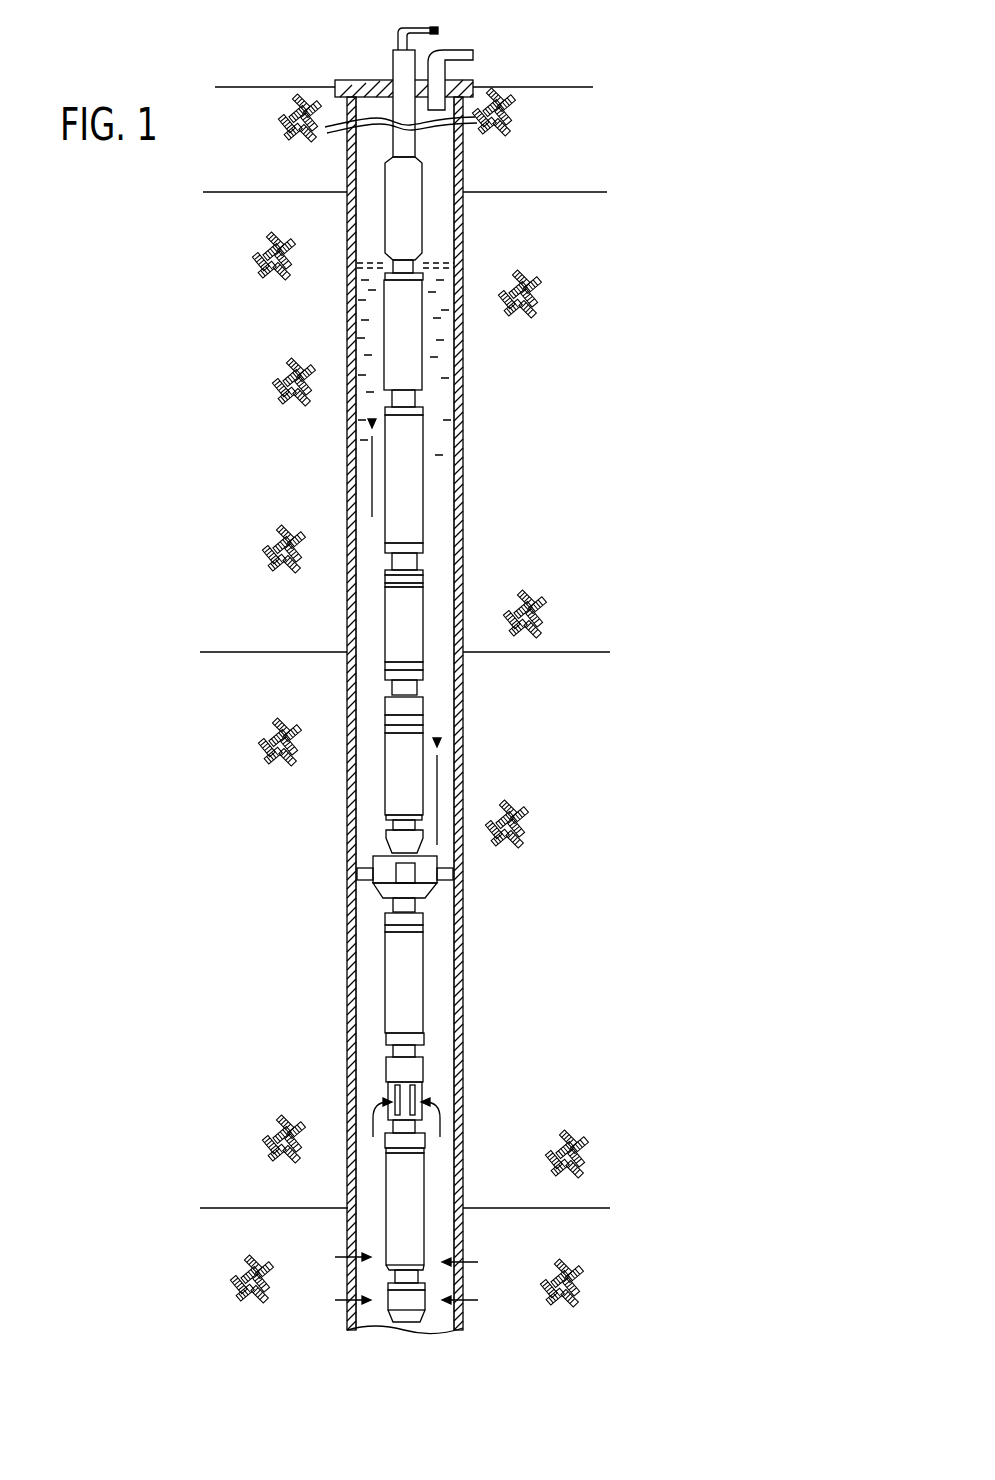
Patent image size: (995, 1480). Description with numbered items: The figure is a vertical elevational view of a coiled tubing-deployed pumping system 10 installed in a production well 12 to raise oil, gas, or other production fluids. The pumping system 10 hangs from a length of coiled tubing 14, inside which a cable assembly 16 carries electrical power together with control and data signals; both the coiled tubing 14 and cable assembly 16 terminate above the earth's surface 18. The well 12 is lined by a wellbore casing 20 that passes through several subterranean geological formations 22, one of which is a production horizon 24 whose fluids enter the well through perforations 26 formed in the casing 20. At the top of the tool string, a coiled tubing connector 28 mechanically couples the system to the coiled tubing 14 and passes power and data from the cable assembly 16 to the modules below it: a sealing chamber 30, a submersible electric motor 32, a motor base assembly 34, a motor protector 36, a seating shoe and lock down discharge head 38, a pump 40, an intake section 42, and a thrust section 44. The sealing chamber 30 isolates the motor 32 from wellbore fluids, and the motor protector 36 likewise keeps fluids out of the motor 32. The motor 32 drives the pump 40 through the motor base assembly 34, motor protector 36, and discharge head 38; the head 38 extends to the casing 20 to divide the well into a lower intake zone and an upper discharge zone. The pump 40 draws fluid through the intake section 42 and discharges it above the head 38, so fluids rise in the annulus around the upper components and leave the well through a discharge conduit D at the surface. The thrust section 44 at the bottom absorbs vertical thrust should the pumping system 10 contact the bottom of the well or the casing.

The coiled tubing-deployed pumping system 10 is at (397, 739).
The production well 12 is at (350, 988).
The coiled tubing 14 is at (400, 63).
The cable assembly 16 is at (438, 29).
The earth's surface 18 is at (530, 87).
The wellbore casing 20 is at (463, 523).
The subterranean geological formations 22 is at (578, 483).
The production horizon 24 is at (630, 1278).
The perforations 26 is at (462, 1297).
The coiled tubing connector 28 is at (413, 215).
The sealing chamber 30 is at (410, 355).
The submersible electric motor 32 is at (410, 447).
The motor base assembly 34 is at (400, 612).
The motor protector 36 is at (395, 753).
The seating shoe and lock down discharge head 38 is at (383, 871).
The pump 40 is at (392, 950).
The intake section 42 is at (388, 1088).
The thrust section 44 is at (415, 1175).
The discharge conduit D is at (467, 50).